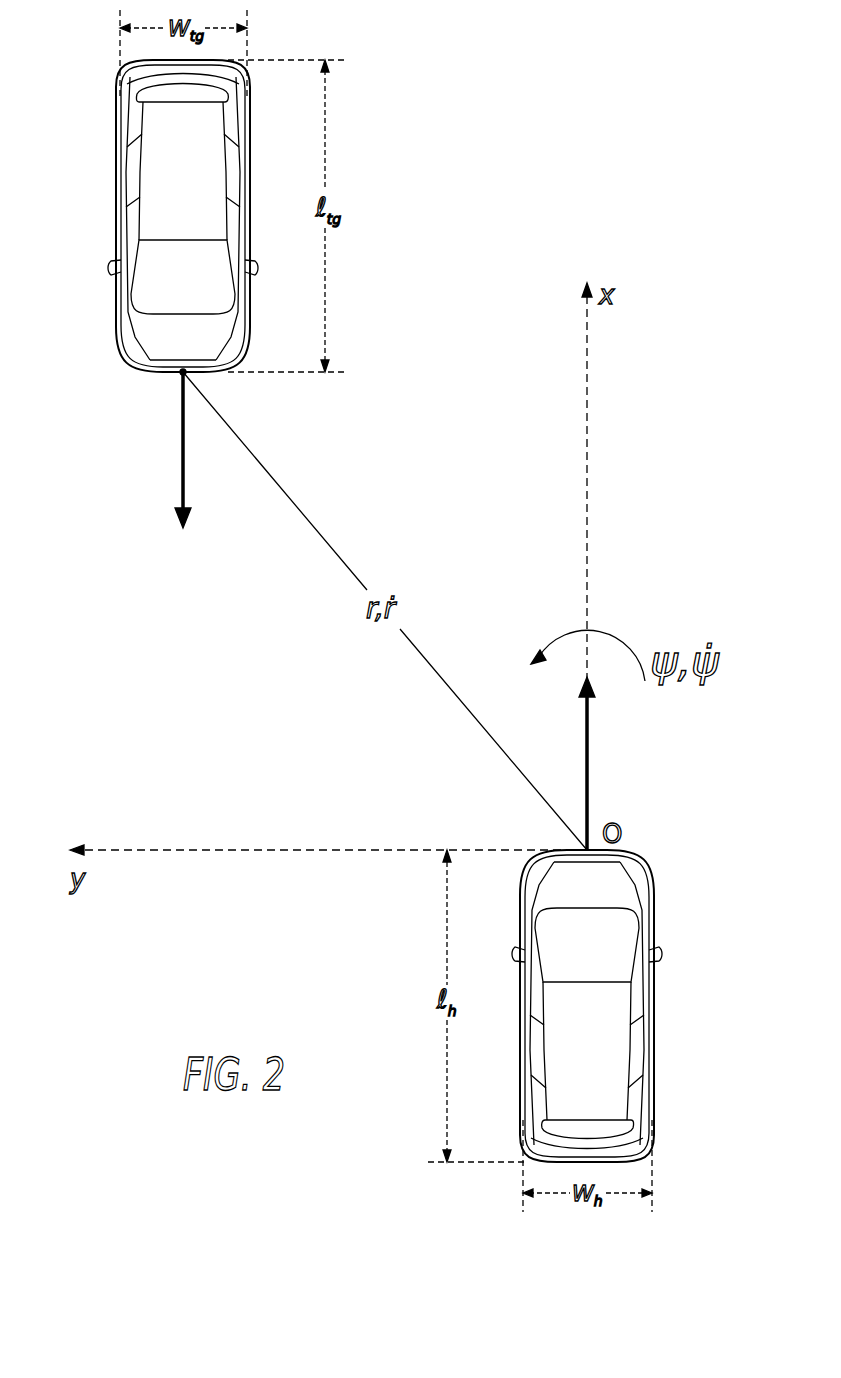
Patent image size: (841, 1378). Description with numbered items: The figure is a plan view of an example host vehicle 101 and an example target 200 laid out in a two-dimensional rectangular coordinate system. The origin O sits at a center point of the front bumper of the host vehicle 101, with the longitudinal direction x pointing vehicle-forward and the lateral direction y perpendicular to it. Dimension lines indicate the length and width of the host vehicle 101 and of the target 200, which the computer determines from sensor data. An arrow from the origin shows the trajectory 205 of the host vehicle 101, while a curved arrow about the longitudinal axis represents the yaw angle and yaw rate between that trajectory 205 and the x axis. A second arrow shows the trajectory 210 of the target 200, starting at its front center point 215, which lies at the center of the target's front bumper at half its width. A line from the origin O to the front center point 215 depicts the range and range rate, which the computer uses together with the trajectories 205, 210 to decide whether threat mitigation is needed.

The target 200 is at (118, 145).
The front center point 215 is at (180, 377).
The trajectory 210 is at (180, 463).
The trajectory 205 is at (590, 742).
The vehicle 101 is at (655, 940).